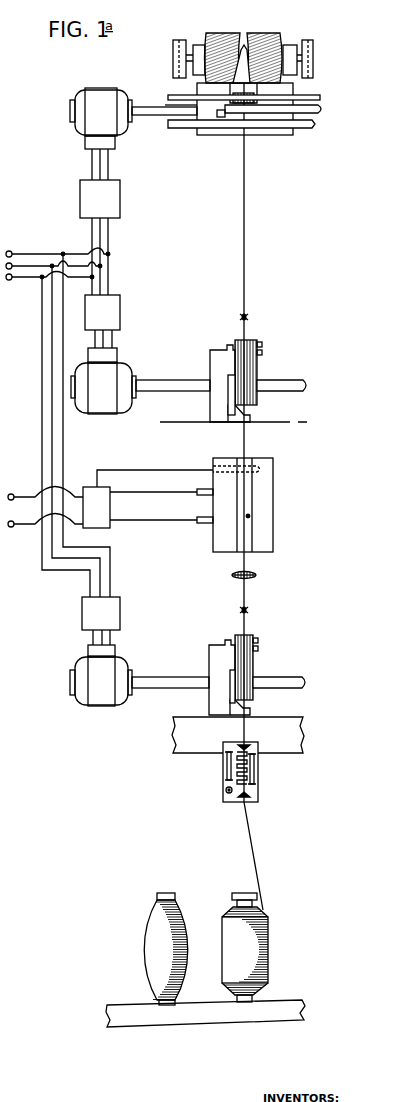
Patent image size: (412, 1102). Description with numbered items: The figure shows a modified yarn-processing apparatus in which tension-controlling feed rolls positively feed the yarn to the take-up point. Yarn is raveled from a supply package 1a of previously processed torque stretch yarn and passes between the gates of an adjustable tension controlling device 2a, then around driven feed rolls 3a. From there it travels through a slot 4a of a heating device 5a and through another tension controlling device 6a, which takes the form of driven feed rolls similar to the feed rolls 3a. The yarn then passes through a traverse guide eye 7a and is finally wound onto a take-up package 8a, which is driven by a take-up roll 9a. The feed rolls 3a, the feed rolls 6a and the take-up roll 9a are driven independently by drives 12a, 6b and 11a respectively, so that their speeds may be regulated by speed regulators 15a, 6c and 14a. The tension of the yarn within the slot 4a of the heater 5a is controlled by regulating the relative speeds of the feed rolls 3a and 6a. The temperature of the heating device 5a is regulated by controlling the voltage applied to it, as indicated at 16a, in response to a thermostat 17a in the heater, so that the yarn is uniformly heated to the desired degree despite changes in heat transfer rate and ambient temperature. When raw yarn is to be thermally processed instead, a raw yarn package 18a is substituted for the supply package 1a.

The supply package 1a is at (267, 930).
The adjustable tension controlling device 2a is at (258, 790).
The driven feed rolls 3a is at (252, 667).
The slot 4a is at (248, 516).
The heating device 5a is at (273, 537).
The tension controlling device 6a is at (257, 372).
The drive 6b is at (123, 367).
The speed regulator 6c is at (113, 310).
The traverse guide eye 7a is at (253, 33).
The take-up package 8a is at (213, 38).
The take-up roll 9a is at (213, 135).
The drive 11a is at (104, 94).
The drive 12a is at (98, 705).
The speed regulator 14a is at (113, 212).
The speed regulator 15a is at (120, 604).
The voltage regulator 16a is at (110, 528).
The thermostat 17a is at (213, 466).
The raw yarn package 18a is at (182, 907).